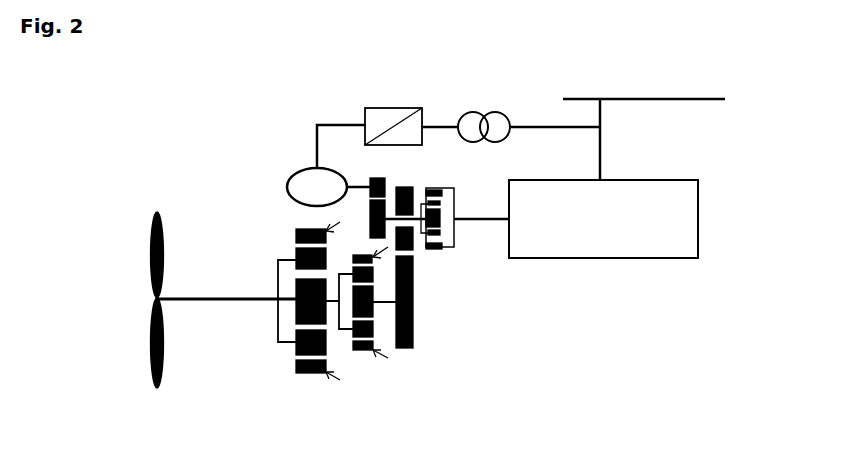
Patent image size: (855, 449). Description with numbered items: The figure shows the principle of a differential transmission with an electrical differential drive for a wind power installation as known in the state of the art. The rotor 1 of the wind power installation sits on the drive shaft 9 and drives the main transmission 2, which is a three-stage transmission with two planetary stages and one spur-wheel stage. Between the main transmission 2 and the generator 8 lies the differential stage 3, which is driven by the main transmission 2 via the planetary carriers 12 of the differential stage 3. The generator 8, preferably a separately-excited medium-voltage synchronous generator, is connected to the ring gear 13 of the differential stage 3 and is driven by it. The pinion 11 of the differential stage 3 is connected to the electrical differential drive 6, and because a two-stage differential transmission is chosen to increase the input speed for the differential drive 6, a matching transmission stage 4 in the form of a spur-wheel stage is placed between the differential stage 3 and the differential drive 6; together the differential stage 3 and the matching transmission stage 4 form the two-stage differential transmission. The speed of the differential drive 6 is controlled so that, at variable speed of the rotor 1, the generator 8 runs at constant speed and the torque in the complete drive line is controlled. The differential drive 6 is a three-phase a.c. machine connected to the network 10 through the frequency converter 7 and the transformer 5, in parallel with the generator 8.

The rotor 1 is at (155, 213).
The drive shaft 9 is at (246, 298).
The electrical differential drive 6 is at (300, 172).
The matching transmission stage 4 is at (360, 170).
The frequency converter 7 is at (387, 108).
The transformer 5 is at (483, 114).
The network 10 is at (590, 99).
The main transmission 2 is at (375, 376).
The differential stage 3 is at (466, 236).
The planetary carriers 12 is at (438, 227).
The pinion 11 is at (452, 235).
The ring gear 13 is at (433, 249).
The generator 8 is at (617, 259).